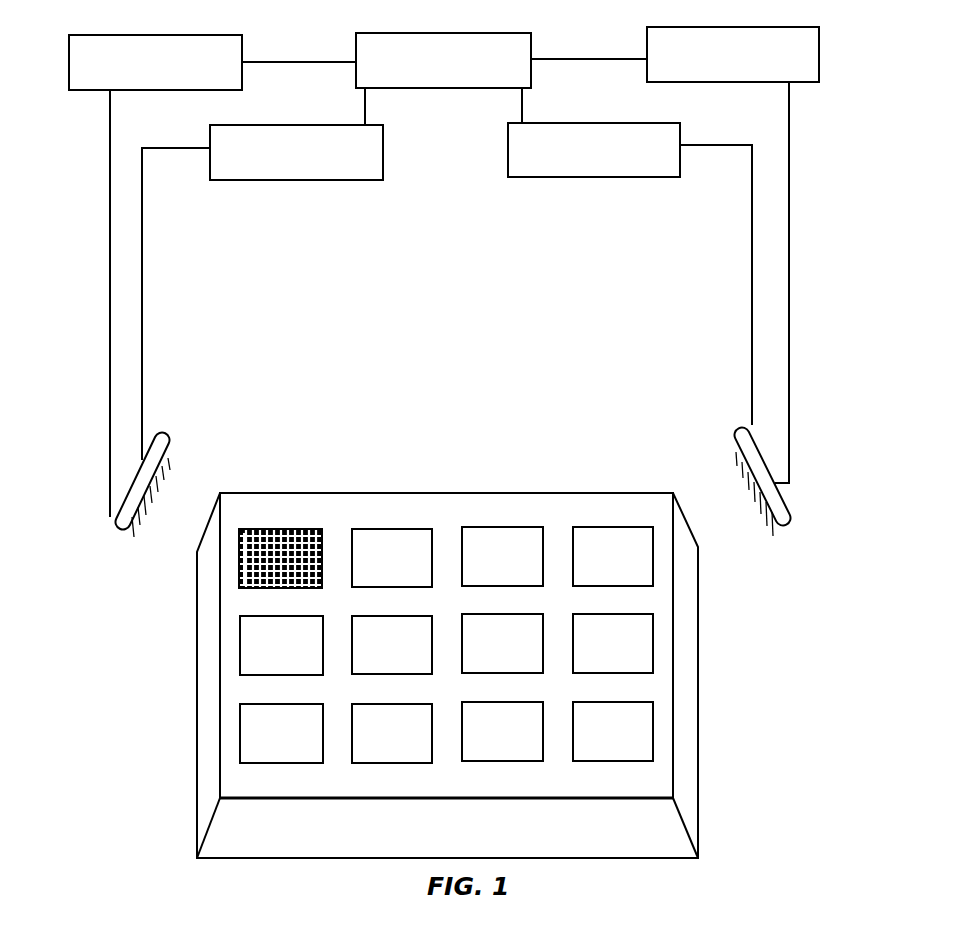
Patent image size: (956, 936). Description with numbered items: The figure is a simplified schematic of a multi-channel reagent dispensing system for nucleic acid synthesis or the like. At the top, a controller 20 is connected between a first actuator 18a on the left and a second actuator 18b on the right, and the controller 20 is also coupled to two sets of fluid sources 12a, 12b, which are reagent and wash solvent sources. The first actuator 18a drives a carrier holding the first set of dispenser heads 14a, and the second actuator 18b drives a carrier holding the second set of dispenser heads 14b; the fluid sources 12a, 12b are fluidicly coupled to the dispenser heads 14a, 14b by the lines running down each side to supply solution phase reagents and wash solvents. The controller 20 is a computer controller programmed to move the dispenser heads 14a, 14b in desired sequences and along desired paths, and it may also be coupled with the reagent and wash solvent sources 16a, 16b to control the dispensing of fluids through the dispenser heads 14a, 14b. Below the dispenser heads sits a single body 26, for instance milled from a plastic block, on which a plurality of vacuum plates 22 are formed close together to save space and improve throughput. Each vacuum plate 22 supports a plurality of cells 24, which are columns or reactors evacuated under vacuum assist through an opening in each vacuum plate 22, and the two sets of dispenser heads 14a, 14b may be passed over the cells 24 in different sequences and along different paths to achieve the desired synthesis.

The first actuator 18a is at (213, 35).
The second actuator 18b is at (790, 27).
The controller 20 is at (500, 33).
The fluid sources 12a is at (353, 180).
The fluid sources 12b is at (652, 177).
The reagent and wash solvent sources 16a is at (164, 432).
The reagent and wash solvent sources 16b is at (742, 428).
The first set of dispenser heads 14a is at (172, 462).
The second set of dispenser heads 14b is at (735, 456).
The vacuum plates 22 is at (374, 587).
The cells 24 is at (296, 529).
The single body 26 is at (597, 858).